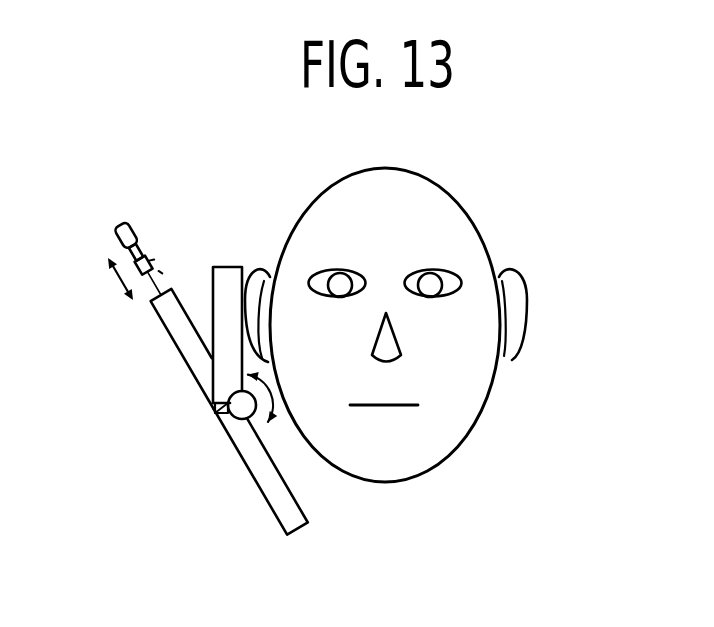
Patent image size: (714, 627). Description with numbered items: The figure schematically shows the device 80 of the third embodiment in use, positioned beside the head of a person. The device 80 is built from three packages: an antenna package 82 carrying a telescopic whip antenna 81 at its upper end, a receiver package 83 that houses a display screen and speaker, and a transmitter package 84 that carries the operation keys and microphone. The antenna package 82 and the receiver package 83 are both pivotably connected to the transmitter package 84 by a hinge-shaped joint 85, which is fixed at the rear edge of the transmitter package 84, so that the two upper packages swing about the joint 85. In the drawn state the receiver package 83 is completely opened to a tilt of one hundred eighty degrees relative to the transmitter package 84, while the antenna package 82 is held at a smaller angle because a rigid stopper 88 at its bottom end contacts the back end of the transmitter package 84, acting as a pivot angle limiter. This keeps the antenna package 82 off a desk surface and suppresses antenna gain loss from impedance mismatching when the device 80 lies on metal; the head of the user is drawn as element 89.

The device 80 is at (152, 474).
The telescopic whip antenna 81 is at (127, 225).
The antenna package 82 is at (168, 332).
The receiver package 83 is at (228, 271).
The transmitter package 84 is at (293, 529).
The hinge-shaped joint 85 is at (233, 420).
The rigid stopper 88 is at (215, 407).
The user's head 89 is at (469, 224).